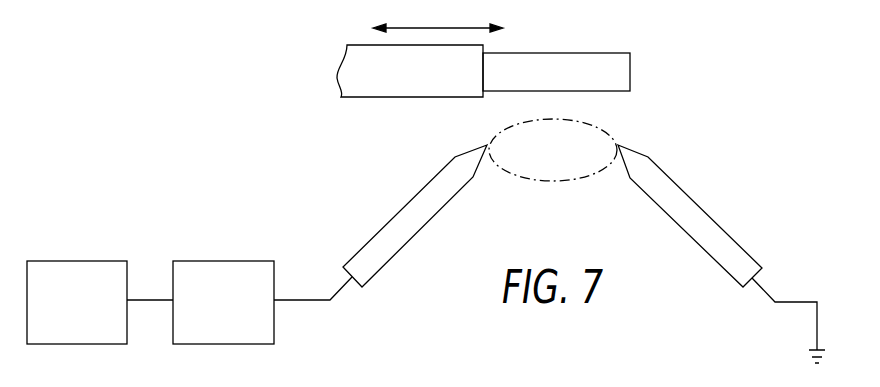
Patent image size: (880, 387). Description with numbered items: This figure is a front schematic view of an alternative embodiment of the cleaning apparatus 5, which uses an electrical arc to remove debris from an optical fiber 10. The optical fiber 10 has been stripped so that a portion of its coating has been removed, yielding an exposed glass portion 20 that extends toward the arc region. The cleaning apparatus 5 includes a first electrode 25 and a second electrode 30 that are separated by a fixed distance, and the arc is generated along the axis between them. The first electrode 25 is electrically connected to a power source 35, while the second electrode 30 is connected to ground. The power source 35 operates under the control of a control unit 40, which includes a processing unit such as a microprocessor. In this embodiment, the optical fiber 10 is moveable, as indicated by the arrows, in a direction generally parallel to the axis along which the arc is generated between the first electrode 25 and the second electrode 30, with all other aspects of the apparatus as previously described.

The cleaning apparatus 5 is at (686, 134).
The optical fiber 10 is at (378, 98).
The exposed glass portion 20 is at (570, 66).
The first electrode 25 is at (392, 218).
The second electrode 30 is at (717, 220).
The power source 35 is at (213, 261).
The control unit 40 is at (80, 261).